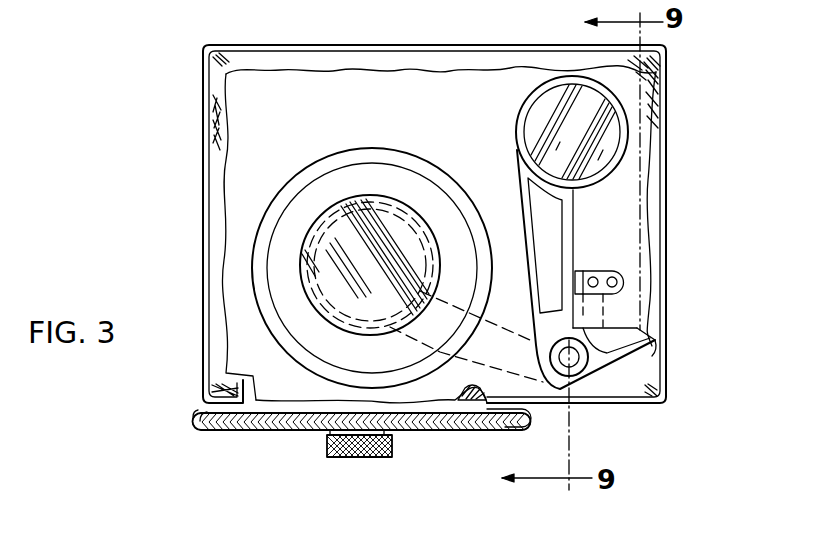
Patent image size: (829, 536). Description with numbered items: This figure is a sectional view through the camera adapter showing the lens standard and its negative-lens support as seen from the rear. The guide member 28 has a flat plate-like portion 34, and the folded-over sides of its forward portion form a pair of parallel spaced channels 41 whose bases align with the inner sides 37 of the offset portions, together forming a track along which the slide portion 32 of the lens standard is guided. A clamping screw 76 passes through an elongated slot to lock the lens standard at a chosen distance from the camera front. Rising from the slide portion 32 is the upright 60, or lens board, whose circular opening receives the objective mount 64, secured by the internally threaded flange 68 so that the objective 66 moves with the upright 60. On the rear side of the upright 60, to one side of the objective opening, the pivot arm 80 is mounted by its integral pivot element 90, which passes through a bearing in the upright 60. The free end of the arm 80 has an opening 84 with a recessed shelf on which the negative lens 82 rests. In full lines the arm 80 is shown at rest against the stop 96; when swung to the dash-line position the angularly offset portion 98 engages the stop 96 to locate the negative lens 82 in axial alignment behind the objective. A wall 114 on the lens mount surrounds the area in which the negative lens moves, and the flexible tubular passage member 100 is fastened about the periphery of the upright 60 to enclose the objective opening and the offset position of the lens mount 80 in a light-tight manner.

The tubular passage member 100 is at (211, 91).
The wall 114 is at (668, 195).
The upright 60 is at (203, 228).
The objective mount 64 is at (310, 190).
The internally threaded flange 68 is at (428, 162).
The objective 66 is at (327, 315).
The negative lens 82 is at (535, 123).
The opening 84 is at (618, 138).
The pivot arm 80 is at (569, 220).
The stop 96 is at (577, 288).
The angularly offset portion 98 is at (648, 352).
The pivot element 90 is at (577, 360).
The flat plate-like portion 34 is at (277, 428).
The guide member 28 is at (197, 428).
The channels 41 is at (197, 412).
The inner sides 37 is at (505, 428).
The slide portion 32 is at (412, 412).
The clamping screw 76 is at (330, 460).